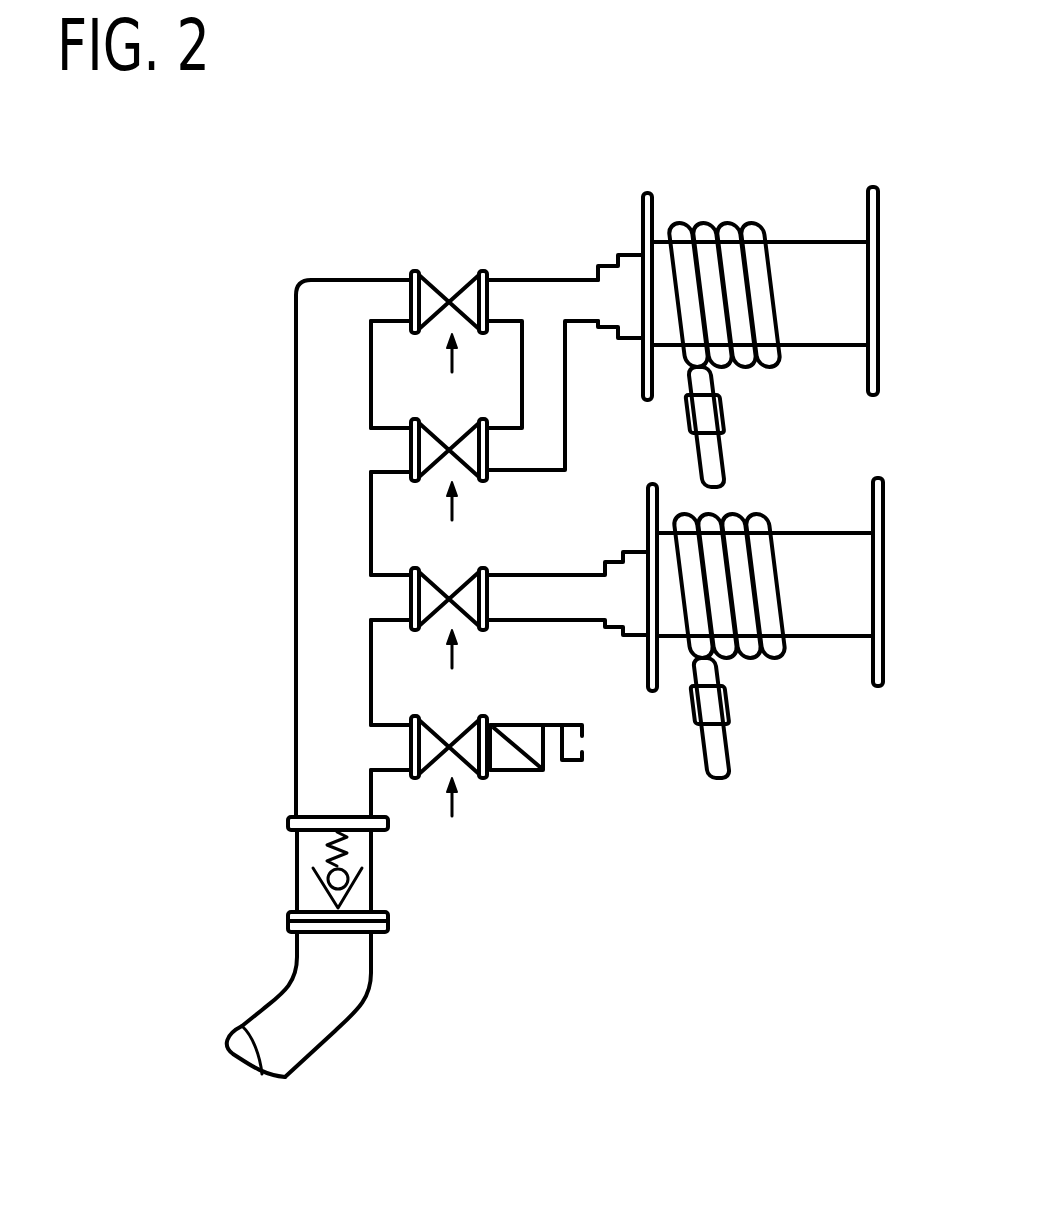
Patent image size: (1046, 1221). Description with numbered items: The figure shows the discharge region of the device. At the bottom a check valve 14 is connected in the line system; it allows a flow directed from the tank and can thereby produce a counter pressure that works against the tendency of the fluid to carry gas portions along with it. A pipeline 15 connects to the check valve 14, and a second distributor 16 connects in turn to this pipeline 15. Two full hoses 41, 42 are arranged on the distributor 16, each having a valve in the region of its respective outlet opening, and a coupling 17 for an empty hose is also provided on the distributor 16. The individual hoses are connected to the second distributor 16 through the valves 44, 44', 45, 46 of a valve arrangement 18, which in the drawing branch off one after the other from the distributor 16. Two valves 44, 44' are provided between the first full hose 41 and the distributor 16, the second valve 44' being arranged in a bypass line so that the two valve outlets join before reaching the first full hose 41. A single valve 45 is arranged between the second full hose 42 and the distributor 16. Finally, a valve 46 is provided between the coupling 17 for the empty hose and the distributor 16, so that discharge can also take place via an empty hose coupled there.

The check valve 14 is at (308, 882).
The pipeline 15 is at (312, 785).
The second distributor 16 is at (118, 499).
The coupling 17 is at (553, 770).
The valve arrangement 18 is at (431, 222).
The first full hose 41 is at (725, 237).
The second full hose 42 is at (777, 660).
The valve 44 is at (477, 271).
The second valve 44' is at (483, 491).
The valve 45 is at (503, 617).
The valve 46 is at (480, 780).